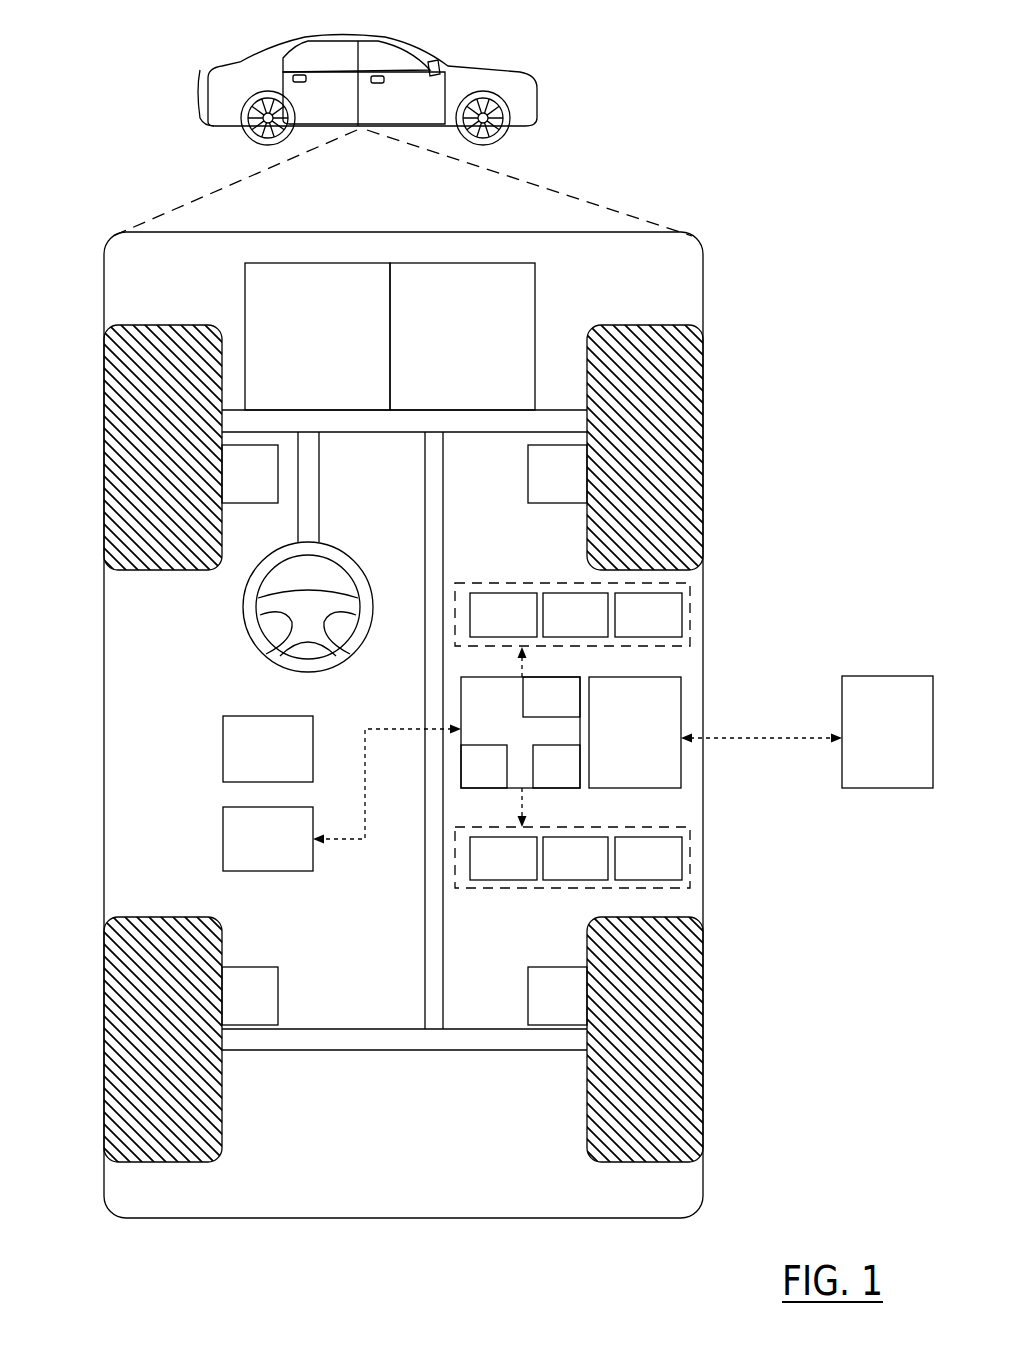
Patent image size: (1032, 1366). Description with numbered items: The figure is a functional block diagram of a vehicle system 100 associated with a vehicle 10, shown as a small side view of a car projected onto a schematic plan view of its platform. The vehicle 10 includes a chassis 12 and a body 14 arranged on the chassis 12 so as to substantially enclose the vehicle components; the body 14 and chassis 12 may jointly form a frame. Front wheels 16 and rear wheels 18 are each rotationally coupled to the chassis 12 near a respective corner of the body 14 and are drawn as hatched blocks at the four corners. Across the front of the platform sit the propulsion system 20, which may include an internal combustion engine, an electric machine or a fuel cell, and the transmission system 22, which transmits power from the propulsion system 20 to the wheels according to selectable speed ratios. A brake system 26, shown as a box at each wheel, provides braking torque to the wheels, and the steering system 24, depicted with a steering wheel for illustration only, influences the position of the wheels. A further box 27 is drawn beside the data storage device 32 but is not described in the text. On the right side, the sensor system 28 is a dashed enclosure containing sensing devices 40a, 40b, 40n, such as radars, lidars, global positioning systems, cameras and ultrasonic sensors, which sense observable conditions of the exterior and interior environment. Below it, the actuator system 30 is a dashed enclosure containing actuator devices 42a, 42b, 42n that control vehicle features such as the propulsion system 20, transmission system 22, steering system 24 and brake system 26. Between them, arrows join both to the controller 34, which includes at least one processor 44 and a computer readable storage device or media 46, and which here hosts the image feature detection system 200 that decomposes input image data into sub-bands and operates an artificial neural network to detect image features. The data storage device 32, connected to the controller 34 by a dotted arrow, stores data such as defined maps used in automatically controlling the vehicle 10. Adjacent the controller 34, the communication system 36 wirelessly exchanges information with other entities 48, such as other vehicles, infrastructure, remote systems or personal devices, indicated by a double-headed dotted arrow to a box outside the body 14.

The vehicle 10 is at (200, 93).
The vehicle system 100 is at (652, 194).
The body 14 is at (104, 717).
The front wheels 16 is at (143, 325).
The rear wheels 18 is at (173, 1162).
The propulsion system 20 is at (300, 353).
The transmission system 22 is at (445, 353).
The chassis 12 is at (423, 953).
The brake system 26 is at (233, 489).
The steering system 24 is at (332, 470).
The brake module 27 is at (251, 765).
The data storage device 32 is at (251, 857).
The sensor system 28 is at (515, 583).
The sensing device 40a is at (479, 629).
The sensing device 40b is at (551, 629).
The sensing device 40n is at (624, 629).
The actuator system 30 is at (508, 888).
The actuator device 42a is at (479, 872).
The actuator device 42b is at (551, 872).
The actuator device 42n is at (624, 872).
The controller 34 is at (483, 738).
The image feature detection system 200 is at (527, 710).
The processor 44 is at (469, 779).
The computer readable storage device or media 46 is at (541, 779).
The communication system 36 is at (618, 745).
The other entities 48 is at (870, 730).